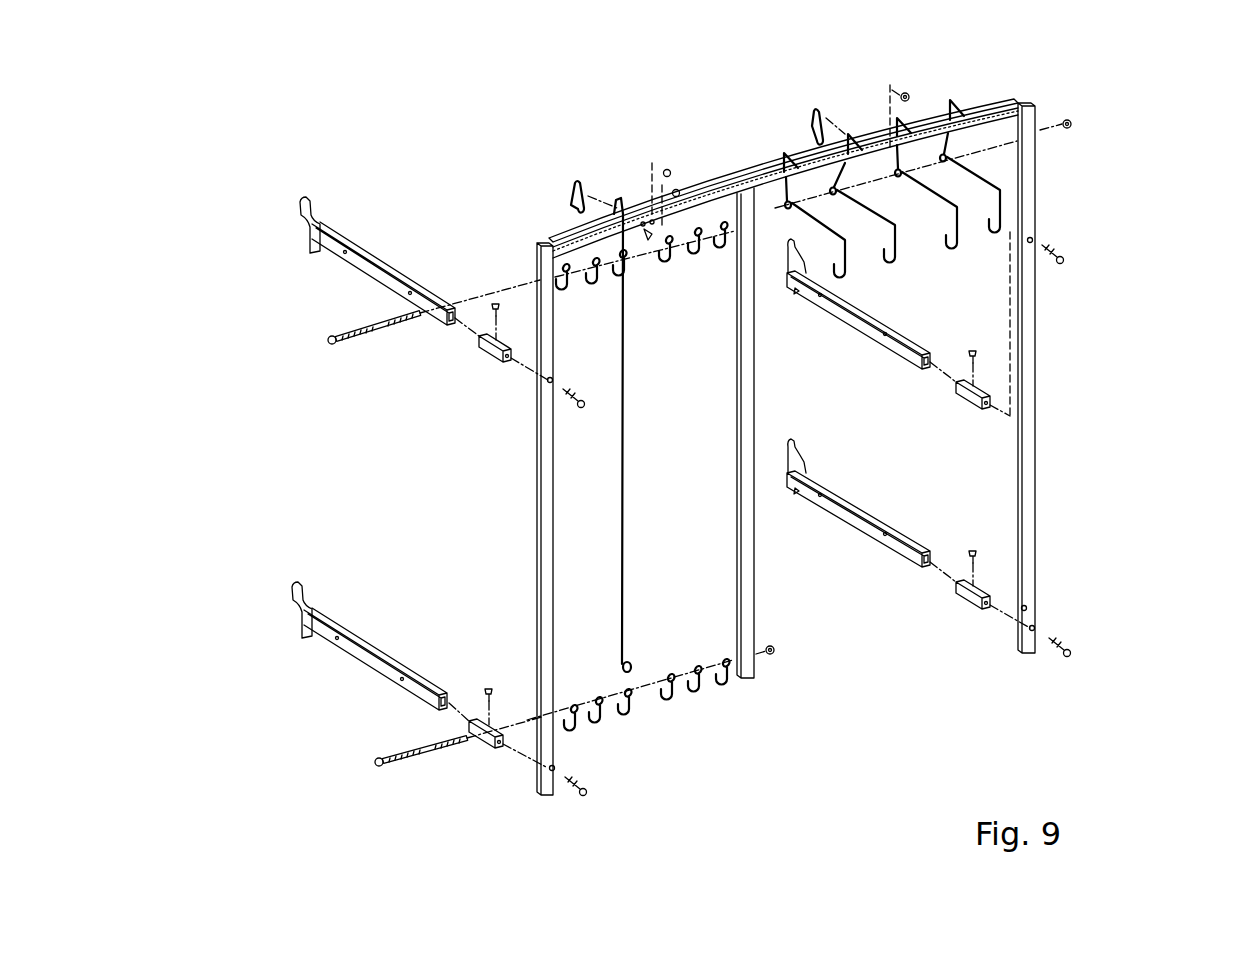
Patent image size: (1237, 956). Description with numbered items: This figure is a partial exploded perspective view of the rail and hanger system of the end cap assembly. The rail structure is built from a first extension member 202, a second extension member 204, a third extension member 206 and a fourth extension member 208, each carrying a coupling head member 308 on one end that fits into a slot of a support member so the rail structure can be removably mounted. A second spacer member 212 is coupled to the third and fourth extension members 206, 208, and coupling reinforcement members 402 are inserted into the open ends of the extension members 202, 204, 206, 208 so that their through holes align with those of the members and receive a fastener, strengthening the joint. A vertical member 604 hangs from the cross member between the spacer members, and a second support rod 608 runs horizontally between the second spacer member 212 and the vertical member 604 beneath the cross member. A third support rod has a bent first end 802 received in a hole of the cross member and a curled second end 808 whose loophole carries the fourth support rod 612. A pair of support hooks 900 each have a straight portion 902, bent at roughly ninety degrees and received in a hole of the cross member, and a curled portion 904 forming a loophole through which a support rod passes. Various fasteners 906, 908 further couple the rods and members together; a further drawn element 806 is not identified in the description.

The first extension member 202 is at (340, 240).
The second extension member 204 is at (367, 660).
The third extension member 206 is at (883, 323).
The fourth extension member 208 is at (898, 548).
The second spacer member 212 is at (1033, 500).
The coupling head member 308 is at (300, 203).
The coupling reinforcement member 402 is at (480, 353).
The vertical member 604 is at (750, 387).
The second support rod 608 is at (352, 337).
The fourth support rod 612 is at (397, 768).
The first end 802 is at (630, 200).
The large hook 806 is at (1010, 217).
The second end 808 is at (629, 662).
The support hook 900 is at (570, 193).
The straight portion 902 is at (576, 176).
The curled portion 904 is at (569, 215).
The fastener 906 is at (588, 400).
The fastener 908 is at (910, 97).